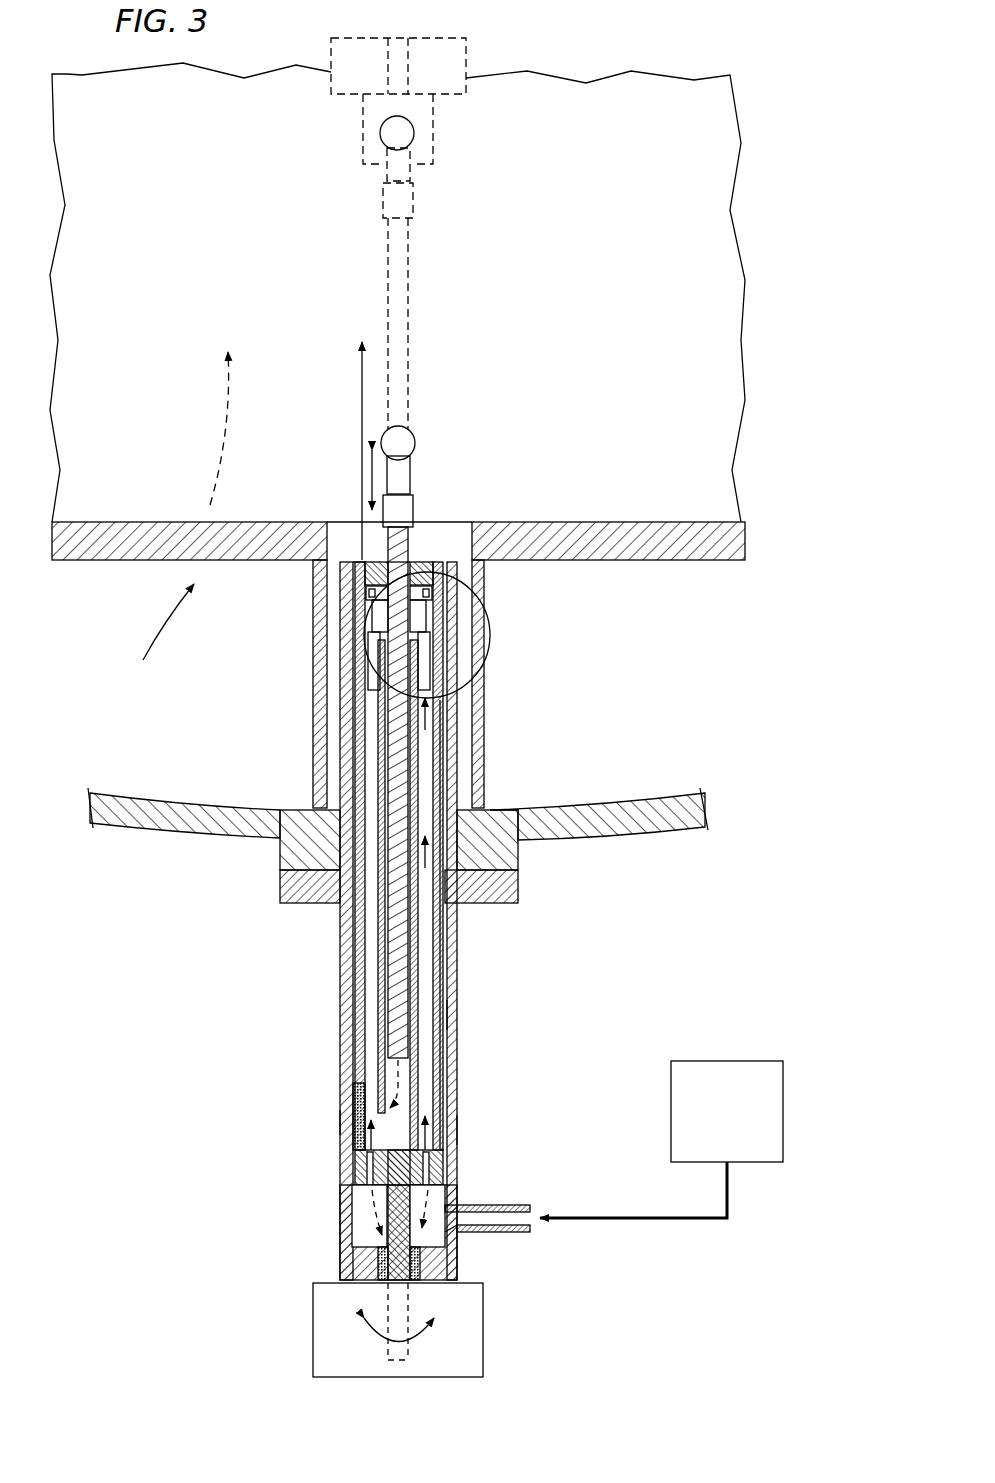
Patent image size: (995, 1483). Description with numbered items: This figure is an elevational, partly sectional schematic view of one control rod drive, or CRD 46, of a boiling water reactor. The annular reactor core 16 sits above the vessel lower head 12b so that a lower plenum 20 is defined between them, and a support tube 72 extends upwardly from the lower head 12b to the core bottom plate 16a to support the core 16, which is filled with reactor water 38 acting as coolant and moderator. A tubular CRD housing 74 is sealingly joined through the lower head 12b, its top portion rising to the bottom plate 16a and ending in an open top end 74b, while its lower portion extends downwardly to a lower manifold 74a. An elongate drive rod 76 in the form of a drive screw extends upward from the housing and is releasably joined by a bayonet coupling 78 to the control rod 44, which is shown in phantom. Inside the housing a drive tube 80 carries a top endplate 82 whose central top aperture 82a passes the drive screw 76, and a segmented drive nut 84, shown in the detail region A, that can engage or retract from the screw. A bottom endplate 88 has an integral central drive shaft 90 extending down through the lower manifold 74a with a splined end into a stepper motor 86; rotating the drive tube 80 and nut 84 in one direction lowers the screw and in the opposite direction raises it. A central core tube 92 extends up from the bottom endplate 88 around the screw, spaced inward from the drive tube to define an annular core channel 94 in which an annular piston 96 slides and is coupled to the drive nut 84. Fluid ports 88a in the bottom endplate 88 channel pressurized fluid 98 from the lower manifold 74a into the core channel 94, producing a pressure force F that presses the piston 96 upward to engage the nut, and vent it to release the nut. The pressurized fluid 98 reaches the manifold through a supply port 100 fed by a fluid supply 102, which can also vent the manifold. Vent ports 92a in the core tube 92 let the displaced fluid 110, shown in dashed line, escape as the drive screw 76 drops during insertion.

The reactor core 16 is at (736, 468).
The core bottom plate 16a is at (680, 560).
The control rod 44 is at (466, 95).
The bayonet coupling 78 is at (436, 180).
The reactor water 38 is at (172, 623).
The support tube 72 is at (312, 757).
The CRD housing 74 is at (468, 910).
The lower manifold 74a is at (365, 1212).
The open top end 74b is at (355, 560).
The lower head 12b is at (640, 840).
The piston 96 is at (360, 705).
The top endplate 82 is at (435, 560).
The central top aperture 82a is at (412, 560).
The segmented drive nut 84 is at (426, 606).
The detail region A is at (492, 640).
The pressure force F is at (430, 712).
The lower plenum 20 is at (602, 697).
The drive rod 76 is at (408, 742).
The central core tube 92 is at (380, 1015).
The vent ports 92a is at (375, 1112).
The annular core channel 94 is at (426, 1076).
The drive tube 80 is at (445, 1018).
The pressurized fluid 98 is at (458, 850).
The fluid 110 is at (340, 1122).
The control rod drive 46 is at (460, 1130).
The bottom endplate 88 is at (448, 1192).
The fluid ports 88a is at (377, 1196).
The central drive shaft 90 is at (382, 1242).
The supply port 100 is at (493, 1235).
The fluid supply 102 is at (755, 1061).
The stepper motor 86 is at (485, 1315).